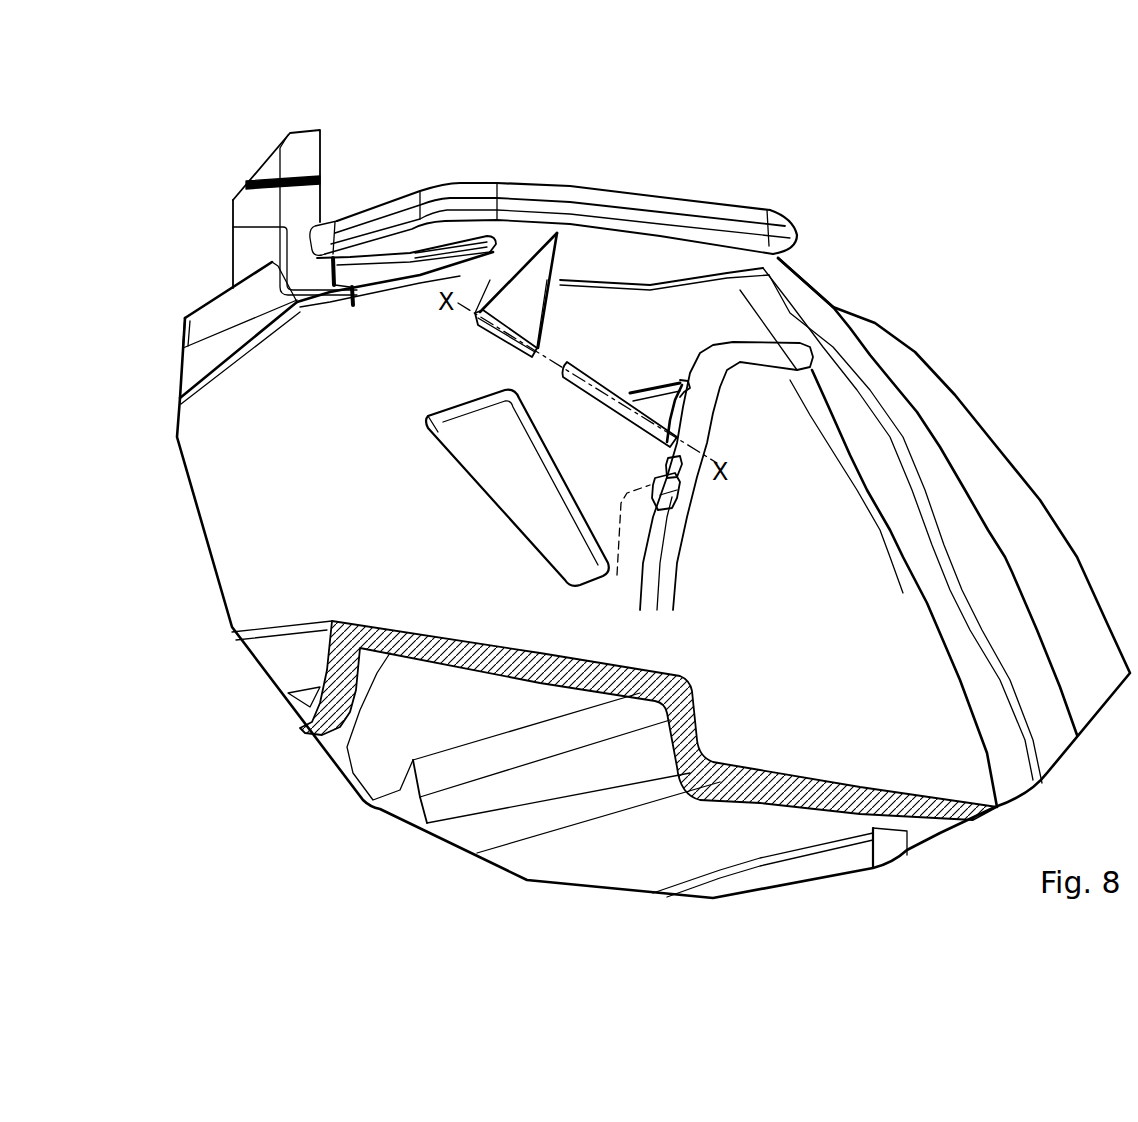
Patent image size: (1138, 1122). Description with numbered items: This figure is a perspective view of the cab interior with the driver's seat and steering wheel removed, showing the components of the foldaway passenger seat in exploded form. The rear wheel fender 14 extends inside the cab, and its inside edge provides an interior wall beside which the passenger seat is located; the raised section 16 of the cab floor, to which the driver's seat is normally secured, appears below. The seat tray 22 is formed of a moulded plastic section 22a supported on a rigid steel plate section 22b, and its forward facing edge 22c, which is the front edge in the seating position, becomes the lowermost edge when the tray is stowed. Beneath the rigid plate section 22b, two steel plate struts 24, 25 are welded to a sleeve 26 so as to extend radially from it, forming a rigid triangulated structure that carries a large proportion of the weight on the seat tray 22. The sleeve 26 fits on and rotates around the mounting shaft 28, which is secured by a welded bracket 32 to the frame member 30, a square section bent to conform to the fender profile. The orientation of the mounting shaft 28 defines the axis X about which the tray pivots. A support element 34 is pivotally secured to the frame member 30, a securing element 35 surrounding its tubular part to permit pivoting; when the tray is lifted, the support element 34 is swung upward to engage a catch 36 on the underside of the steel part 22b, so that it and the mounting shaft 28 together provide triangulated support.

The fender 14 is at (1057, 515).
The raised section of the cab floor 16 is at (368, 730).
The seat tray 22 is at (680, 257).
The moulded plastic section 22a is at (790, 217).
The rigid steel plate section 22b is at (783, 253).
The forward facing edge 22c is at (622, 213).
The strut 24 is at (513, 300).
The strut 25 is at (560, 297).
The sleeve 26 is at (510, 330).
The mounting shaft 28 is at (612, 388).
The frame member 30 is at (678, 616).
The bracket 32 is at (662, 403).
The support element 34 is at (500, 510).
The securing element 35 is at (673, 497).
The catch 36 is at (418, 268).